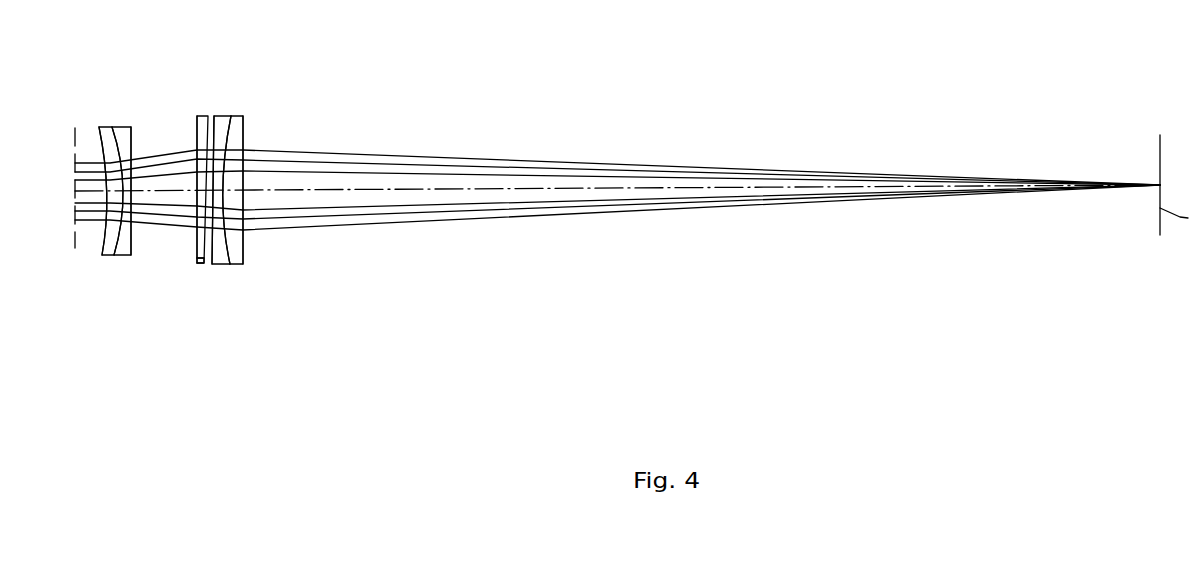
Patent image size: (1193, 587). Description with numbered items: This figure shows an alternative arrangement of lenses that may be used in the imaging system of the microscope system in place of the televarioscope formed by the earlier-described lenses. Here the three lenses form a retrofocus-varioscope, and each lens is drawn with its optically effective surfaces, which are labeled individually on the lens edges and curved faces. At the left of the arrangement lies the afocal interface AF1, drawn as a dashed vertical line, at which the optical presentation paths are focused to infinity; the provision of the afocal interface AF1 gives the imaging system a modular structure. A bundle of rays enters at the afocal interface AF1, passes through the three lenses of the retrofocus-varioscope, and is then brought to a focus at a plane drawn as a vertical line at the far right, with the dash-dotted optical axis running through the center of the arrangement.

The afocal interface AF1 is at (76, 138).